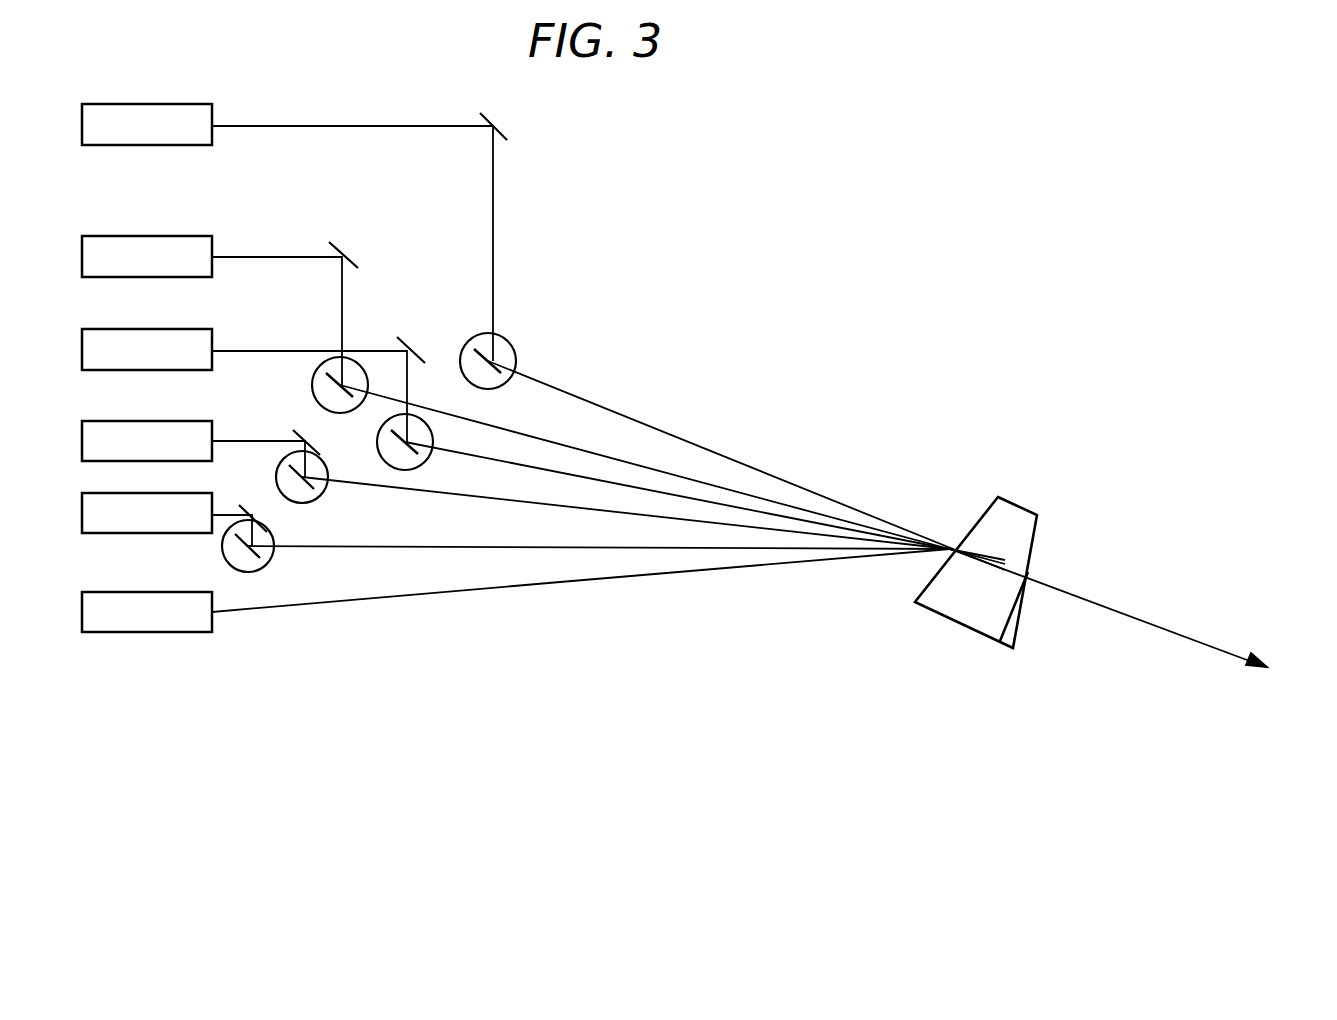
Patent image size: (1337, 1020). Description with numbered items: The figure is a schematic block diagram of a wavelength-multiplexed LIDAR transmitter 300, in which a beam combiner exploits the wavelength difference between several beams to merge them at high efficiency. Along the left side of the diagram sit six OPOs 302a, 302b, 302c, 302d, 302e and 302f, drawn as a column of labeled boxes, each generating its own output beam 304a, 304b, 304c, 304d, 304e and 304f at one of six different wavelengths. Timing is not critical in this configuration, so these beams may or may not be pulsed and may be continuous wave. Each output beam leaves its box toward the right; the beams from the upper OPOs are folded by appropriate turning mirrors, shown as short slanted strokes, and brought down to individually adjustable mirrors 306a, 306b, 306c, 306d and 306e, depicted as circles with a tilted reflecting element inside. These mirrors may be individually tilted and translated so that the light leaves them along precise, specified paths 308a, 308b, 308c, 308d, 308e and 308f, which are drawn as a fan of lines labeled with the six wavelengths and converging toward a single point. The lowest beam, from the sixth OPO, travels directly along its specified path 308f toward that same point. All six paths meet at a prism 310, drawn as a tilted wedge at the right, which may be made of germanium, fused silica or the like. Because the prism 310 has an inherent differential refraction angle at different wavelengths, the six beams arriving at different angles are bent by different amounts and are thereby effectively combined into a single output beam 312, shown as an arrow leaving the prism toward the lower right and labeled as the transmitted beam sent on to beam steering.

The wavelength-multiplexed transmitter 300 is at (592, 227).
The OPO 302a is at (132, 104).
The OPO 302b is at (118, 236).
The OPO 302c is at (105, 329).
The OPO 302d is at (93, 421).
The OPO 302e is at (107, 493).
The OPO 302f is at (145, 592).
The output beam 304a is at (282, 126).
The output beam 304b is at (250, 257).
The output beam 304c is at (245, 351).
The output beam 304d is at (228, 441).
The output beam 304e is at (310, 544).
The output beam 304f is at (333, 603).
The mirror 306a is at (512, 342).
The mirror 306b is at (315, 378).
The mirror 306c is at (377, 446).
The mirror 306d is at (277, 481).
The mirror 306e is at (266, 562).
The specified path 308a is at (648, 426).
The specified path 308b is at (661, 467).
The specified path 308c is at (690, 495).
The specified path 308d is at (603, 510).
The specified path 308e is at (678, 548).
The specified path 308f is at (762, 568).
The prism 310 is at (1033, 510).
The single output beam 312 is at (1102, 603).